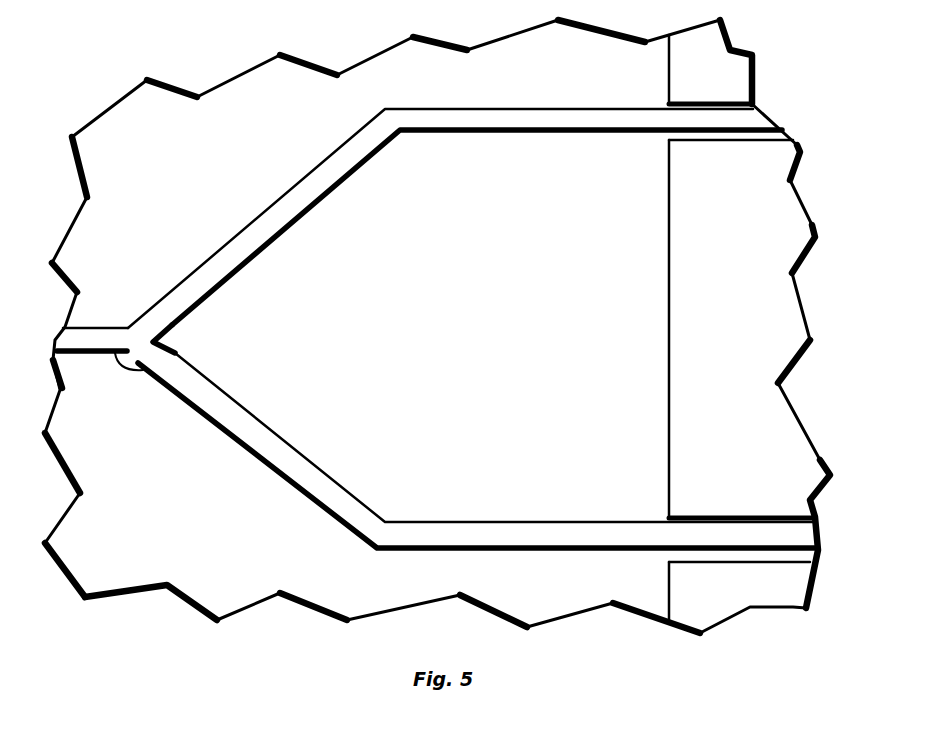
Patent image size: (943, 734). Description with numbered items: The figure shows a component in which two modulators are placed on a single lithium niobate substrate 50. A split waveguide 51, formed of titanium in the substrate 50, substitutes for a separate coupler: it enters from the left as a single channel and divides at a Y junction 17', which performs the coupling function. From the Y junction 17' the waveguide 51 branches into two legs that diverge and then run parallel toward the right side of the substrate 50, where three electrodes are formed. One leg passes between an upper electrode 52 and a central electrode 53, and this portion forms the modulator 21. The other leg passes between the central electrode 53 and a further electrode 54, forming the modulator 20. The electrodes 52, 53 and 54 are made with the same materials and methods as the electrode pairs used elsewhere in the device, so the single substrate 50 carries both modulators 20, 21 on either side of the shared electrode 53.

The LiNbO3 substrate 50 is at (373, 58).
The electrode 52 is at (733, 80).
The electrode 53 is at (806, 268).
The electrode 54 is at (792, 603).
The modulator 21 is at (660, 147).
The modulator 20 is at (655, 518).
The Y junction 17' is at (113, 333).
The split waveguide 51 is at (197, 380).